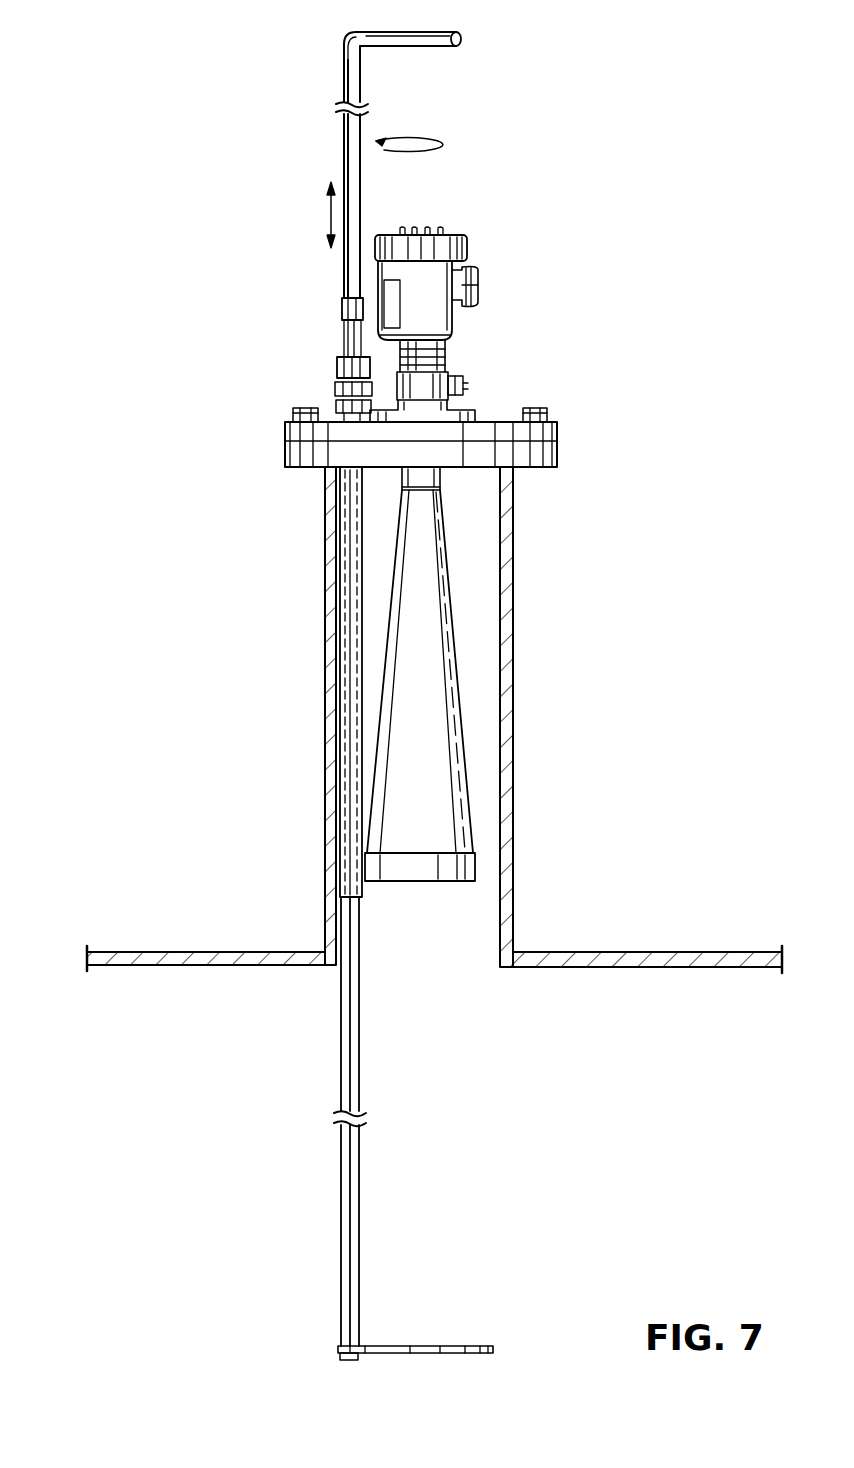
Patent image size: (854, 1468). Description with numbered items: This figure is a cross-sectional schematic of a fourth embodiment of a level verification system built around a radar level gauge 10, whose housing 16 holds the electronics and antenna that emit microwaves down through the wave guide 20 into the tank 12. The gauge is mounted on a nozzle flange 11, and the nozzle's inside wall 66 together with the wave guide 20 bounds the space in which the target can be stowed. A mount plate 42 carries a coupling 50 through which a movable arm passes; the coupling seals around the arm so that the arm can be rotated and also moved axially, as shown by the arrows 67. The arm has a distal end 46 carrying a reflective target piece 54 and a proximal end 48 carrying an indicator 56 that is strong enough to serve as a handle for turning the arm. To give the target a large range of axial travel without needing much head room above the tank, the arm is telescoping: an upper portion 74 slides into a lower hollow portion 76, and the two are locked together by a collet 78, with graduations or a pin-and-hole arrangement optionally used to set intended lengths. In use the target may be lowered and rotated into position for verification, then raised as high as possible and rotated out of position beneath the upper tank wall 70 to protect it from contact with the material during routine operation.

The radar level gauge 10 is at (463, 543).
The nozzle flange 11 is at (325, 640).
The tank 12 is at (721, 947).
The housing 16 is at (452, 325).
The wave guide 20 is at (460, 700).
The mount plate 42 is at (558, 431).
The distal end 46 is at (340, 1357).
The proximal end 48 is at (344, 40).
The coupling 50 is at (337, 363).
The reflective target piece 54 is at (438, 1346).
The indicator 56 is at (424, 47).
The inside wall of the nozzle 66 is at (500, 592).
The arrows 67 is at (331, 212).
The upper tank wall 70 is at (172, 966).
The upper portion 74 is at (348, 118).
The lower hollow portion 76 is at (341, 1064).
The collet 78 is at (341, 302).